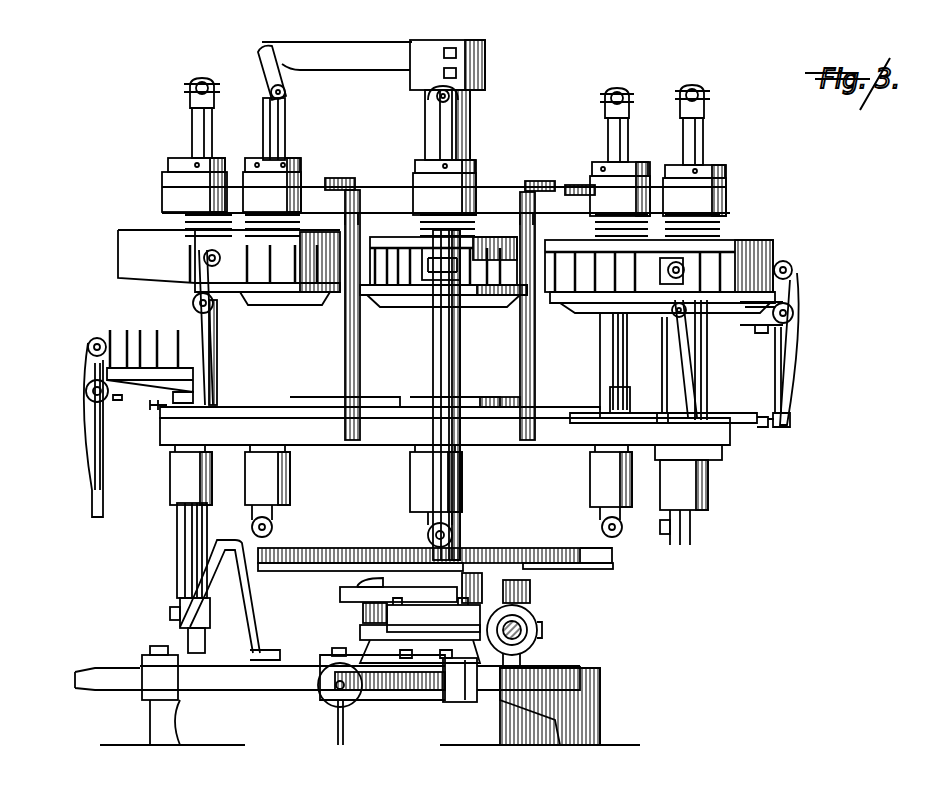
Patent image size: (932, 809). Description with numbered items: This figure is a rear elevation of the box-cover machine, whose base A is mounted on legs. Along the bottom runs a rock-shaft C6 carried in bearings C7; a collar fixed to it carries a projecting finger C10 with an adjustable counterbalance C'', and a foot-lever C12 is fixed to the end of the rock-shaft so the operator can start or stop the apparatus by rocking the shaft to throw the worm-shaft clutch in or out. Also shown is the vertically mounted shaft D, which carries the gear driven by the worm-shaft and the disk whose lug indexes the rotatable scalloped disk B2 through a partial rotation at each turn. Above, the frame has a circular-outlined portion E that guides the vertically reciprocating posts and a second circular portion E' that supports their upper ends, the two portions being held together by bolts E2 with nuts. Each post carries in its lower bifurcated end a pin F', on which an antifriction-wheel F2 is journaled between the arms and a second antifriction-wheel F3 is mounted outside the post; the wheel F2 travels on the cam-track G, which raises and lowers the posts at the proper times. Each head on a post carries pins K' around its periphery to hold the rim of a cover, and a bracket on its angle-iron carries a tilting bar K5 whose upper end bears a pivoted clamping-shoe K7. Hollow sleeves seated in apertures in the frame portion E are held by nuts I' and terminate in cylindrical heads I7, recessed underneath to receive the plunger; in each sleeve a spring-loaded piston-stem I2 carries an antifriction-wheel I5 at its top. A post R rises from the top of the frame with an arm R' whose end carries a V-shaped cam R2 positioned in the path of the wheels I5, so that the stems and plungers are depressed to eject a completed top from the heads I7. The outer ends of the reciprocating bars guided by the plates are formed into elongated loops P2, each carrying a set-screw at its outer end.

The arm R' is at (337, 37).
The V-shaped cam R2 is at (262, 70).
The post R is at (461, 100).
The antifriction-wheel I5 is at (196, 80).
The piston-stem I2 is at (192, 132).
The nut I' is at (444, 180).
The second circular portion of the frame E' is at (427, 397).
The bolts E2 is at (352, 356).
The cylindrical head I7 is at (793, 244).
The clamping-shoe K7 is at (210, 268).
The pins K' is at (445, 336).
The tilting bar K5 is at (87, 455).
The elongated loop P2 is at (175, 408).
The pin F' is at (648, 360).
The circular-outlined portion of the frame E is at (454, 431).
The second antifriction-wheel F3 is at (275, 527).
The antifriction-wheel F2 is at (426, 535).
The rotatable scalloped disk B2 is at (512, 548).
The vertically-mounted shaft D is at (414, 618).
The cam-track G is at (257, 610).
The rock-shaft C6 is at (530, 625).
The foot-lever C12 is at (78, 675).
The bearings C7 is at (155, 705).
The finger C10 is at (335, 690).
The adjustable counterbalance C'' is at (348, 722).
The base A is at (570, 668).